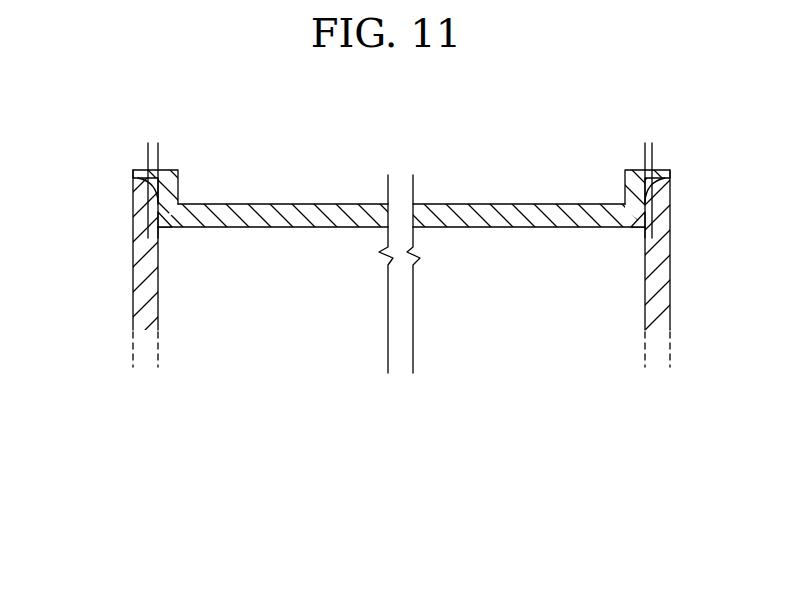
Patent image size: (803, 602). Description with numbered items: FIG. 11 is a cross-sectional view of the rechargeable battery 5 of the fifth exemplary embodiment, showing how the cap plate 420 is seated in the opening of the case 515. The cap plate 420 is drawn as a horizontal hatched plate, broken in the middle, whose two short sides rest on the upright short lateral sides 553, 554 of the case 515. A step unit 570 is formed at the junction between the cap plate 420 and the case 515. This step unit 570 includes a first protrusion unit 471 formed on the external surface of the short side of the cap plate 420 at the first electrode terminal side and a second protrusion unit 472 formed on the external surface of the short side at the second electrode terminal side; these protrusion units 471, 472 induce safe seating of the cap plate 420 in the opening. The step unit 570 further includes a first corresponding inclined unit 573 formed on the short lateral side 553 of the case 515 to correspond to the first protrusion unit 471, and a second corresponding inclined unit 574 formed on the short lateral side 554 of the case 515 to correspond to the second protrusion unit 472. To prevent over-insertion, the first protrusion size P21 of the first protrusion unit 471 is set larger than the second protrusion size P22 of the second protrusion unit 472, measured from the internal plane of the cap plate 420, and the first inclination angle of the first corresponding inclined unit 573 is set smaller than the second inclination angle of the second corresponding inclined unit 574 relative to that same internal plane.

The rechargeable battery 5 is at (390, 120).
The cap plate 420 is at (302, 216).
The first protrusion unit 471 is at (137, 183).
The second protrusion unit 472 is at (650, 214).
The short lateral side 553 is at (133, 291).
The short lateral side 554 is at (670, 289).
The first corresponding inclined unit 573 is at (140, 238).
The second corresponding inclined unit 574 is at (650, 233).
The case 515 is at (114, 392).
The step unit 570 is at (576, 496).
The first protrusion size P21 is at (187, 152).
The second protrusion size P22 is at (678, 152).